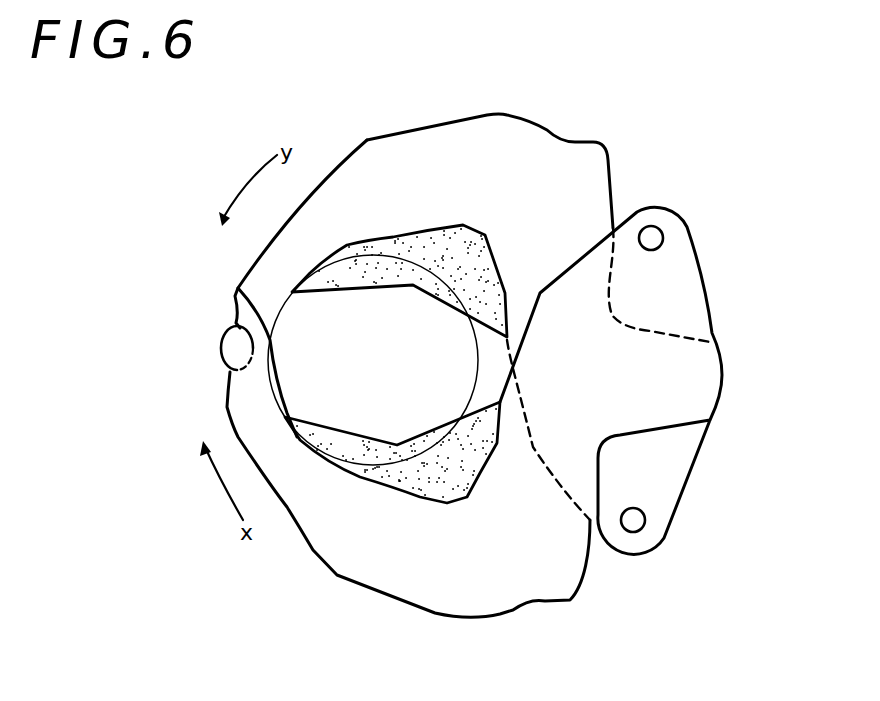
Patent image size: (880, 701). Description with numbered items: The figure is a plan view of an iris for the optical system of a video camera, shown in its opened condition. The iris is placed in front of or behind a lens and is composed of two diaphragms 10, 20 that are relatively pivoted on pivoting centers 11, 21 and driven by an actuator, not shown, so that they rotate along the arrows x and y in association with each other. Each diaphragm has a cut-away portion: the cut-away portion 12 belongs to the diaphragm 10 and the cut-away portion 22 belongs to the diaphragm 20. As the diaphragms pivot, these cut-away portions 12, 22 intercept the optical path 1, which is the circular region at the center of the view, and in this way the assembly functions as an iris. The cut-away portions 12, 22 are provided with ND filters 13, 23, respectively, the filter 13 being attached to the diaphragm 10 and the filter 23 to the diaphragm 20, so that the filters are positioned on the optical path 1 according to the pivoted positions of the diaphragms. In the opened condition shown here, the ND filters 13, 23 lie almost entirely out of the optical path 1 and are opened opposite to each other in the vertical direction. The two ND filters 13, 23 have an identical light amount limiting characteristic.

The optical path 1 is at (243, 287).
The diaphragm 10 is at (570, 600).
The pivoting center 11 is at (664, 238).
The cut-away portion 12 is at (347, 473).
The ND filter 13 is at (442, 473).
The diaphragm 20 is at (607, 170).
The pivoting center 21 is at (646, 520).
The cut-away portion 22 is at (408, 233).
The ND filter 23 is at (467, 262).